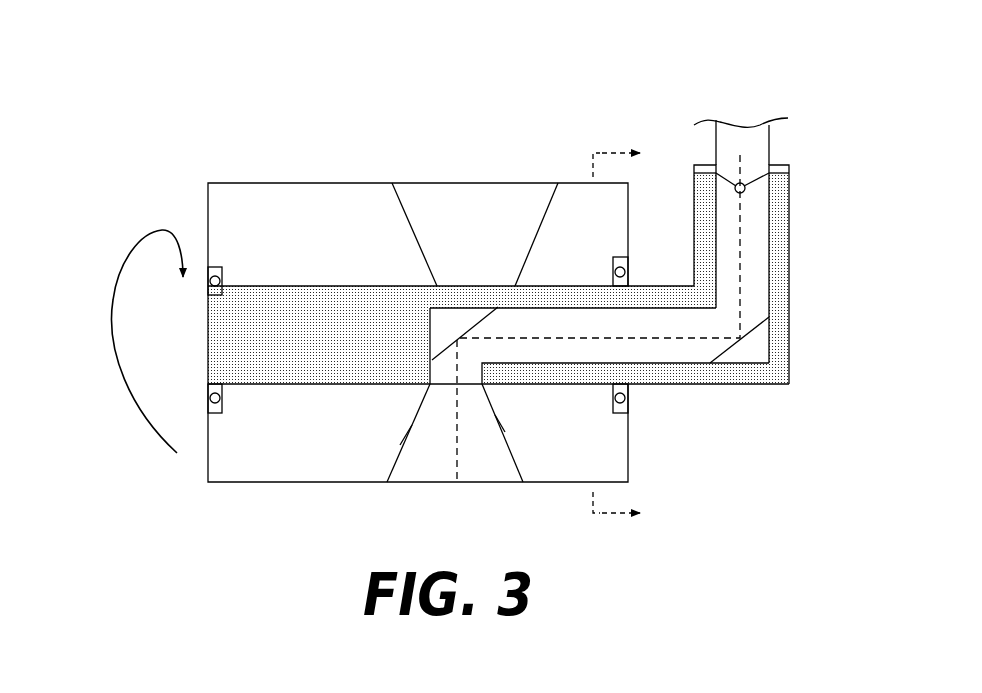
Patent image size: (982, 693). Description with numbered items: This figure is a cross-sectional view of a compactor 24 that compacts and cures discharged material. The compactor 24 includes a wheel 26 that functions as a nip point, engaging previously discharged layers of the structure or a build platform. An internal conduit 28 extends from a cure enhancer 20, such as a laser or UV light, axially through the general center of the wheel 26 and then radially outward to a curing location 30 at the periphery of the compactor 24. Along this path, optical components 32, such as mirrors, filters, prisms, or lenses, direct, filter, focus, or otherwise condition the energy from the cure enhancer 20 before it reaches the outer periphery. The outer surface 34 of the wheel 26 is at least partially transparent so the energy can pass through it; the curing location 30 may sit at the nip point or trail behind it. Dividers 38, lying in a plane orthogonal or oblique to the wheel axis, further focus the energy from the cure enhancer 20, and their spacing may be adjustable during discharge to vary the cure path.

The cure enhancer 20 is at (752, 141).
The compactor 24 is at (165, 100).
The wheel 26 is at (428, 183).
The internal conduit 28 is at (782, 236).
The curing location 30 is at (458, 482).
The optical component 32 is at (457, 327).
The outer surface 34 is at (273, 449).
The divider 38 is at (400, 445).